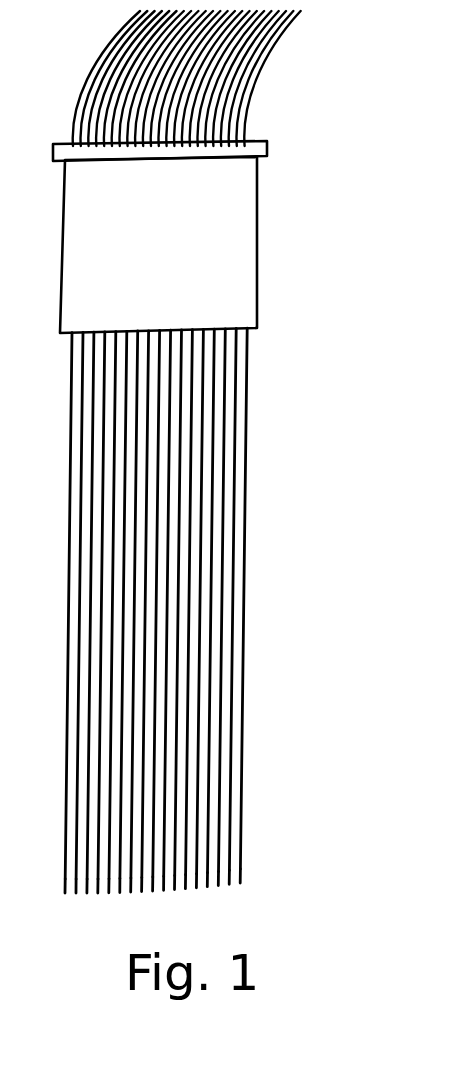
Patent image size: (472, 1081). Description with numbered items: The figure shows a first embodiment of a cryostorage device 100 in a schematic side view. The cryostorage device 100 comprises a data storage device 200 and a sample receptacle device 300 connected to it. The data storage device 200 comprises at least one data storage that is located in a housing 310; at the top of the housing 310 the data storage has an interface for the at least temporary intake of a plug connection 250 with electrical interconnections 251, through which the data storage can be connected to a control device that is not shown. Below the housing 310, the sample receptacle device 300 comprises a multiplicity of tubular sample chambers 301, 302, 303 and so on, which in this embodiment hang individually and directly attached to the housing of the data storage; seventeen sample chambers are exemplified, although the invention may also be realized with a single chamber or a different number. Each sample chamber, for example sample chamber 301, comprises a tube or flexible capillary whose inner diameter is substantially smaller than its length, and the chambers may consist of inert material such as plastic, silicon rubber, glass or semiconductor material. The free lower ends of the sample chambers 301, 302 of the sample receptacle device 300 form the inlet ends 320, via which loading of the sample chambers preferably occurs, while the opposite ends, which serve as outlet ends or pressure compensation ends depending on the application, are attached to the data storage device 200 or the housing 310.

The cryostorage device 100 is at (223, 466).
The data storage device 200 is at (223, 172).
The plug connection 250 is at (267, 143).
The electrical interconnections 251 is at (262, 62).
The housing 310 is at (257, 287).
The sample receptacle device 300 is at (220, 624).
The tubular sample chamber 301 is at (240, 832).
The tubular sample chamber 302 is at (233, 803).
The tubular sample chamber 303 is at (220, 773).
The inlet ends 320 is at (346, 919).